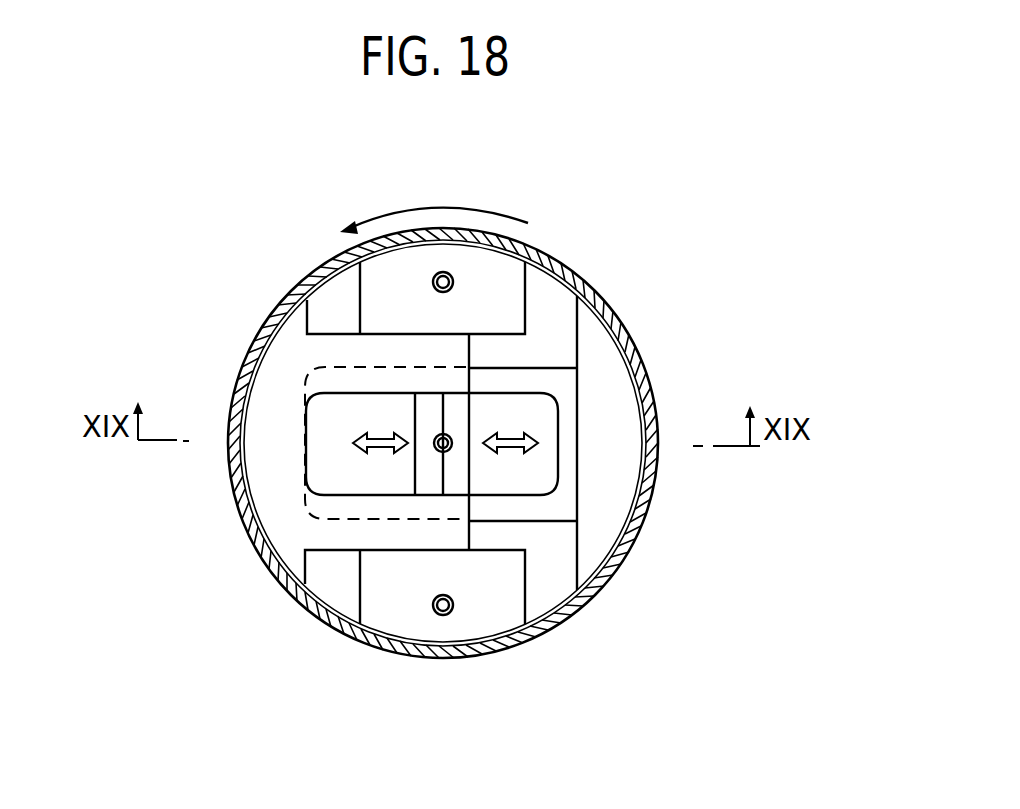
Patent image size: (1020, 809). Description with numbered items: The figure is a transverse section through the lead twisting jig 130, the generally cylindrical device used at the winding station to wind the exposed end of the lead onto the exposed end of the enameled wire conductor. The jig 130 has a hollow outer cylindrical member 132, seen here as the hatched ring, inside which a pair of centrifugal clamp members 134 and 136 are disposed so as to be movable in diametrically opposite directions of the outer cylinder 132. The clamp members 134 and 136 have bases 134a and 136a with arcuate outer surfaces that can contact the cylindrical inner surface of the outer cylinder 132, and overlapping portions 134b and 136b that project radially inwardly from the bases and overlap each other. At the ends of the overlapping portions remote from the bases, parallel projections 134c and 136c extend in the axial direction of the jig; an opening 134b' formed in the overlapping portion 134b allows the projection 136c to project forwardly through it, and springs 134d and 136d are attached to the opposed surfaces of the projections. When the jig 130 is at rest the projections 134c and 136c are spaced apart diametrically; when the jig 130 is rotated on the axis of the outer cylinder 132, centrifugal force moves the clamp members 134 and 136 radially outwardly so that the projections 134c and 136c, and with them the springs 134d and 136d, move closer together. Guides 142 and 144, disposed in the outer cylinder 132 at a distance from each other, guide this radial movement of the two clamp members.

The jig 130 is at (588, 257).
The outer cylindrical member 132 is at (253, 344).
The centrifugal clamp member 134 is at (455, 427).
The base 134a is at (278, 390).
The overlapping portion 134b is at (261, 584).
The opening 134b' is at (308, 475).
The projection 134c is at (463, 418).
The spring 134d is at (478, 470).
The centrifugal clamp member 136 is at (432, 408).
The base 136a is at (602, 353).
The overlapping portion 136b is at (534, 512).
The projection 136c is at (428, 408).
The spring 136d is at (438, 451).
The guide 142 is at (505, 272).
The guide 144 is at (487, 615).